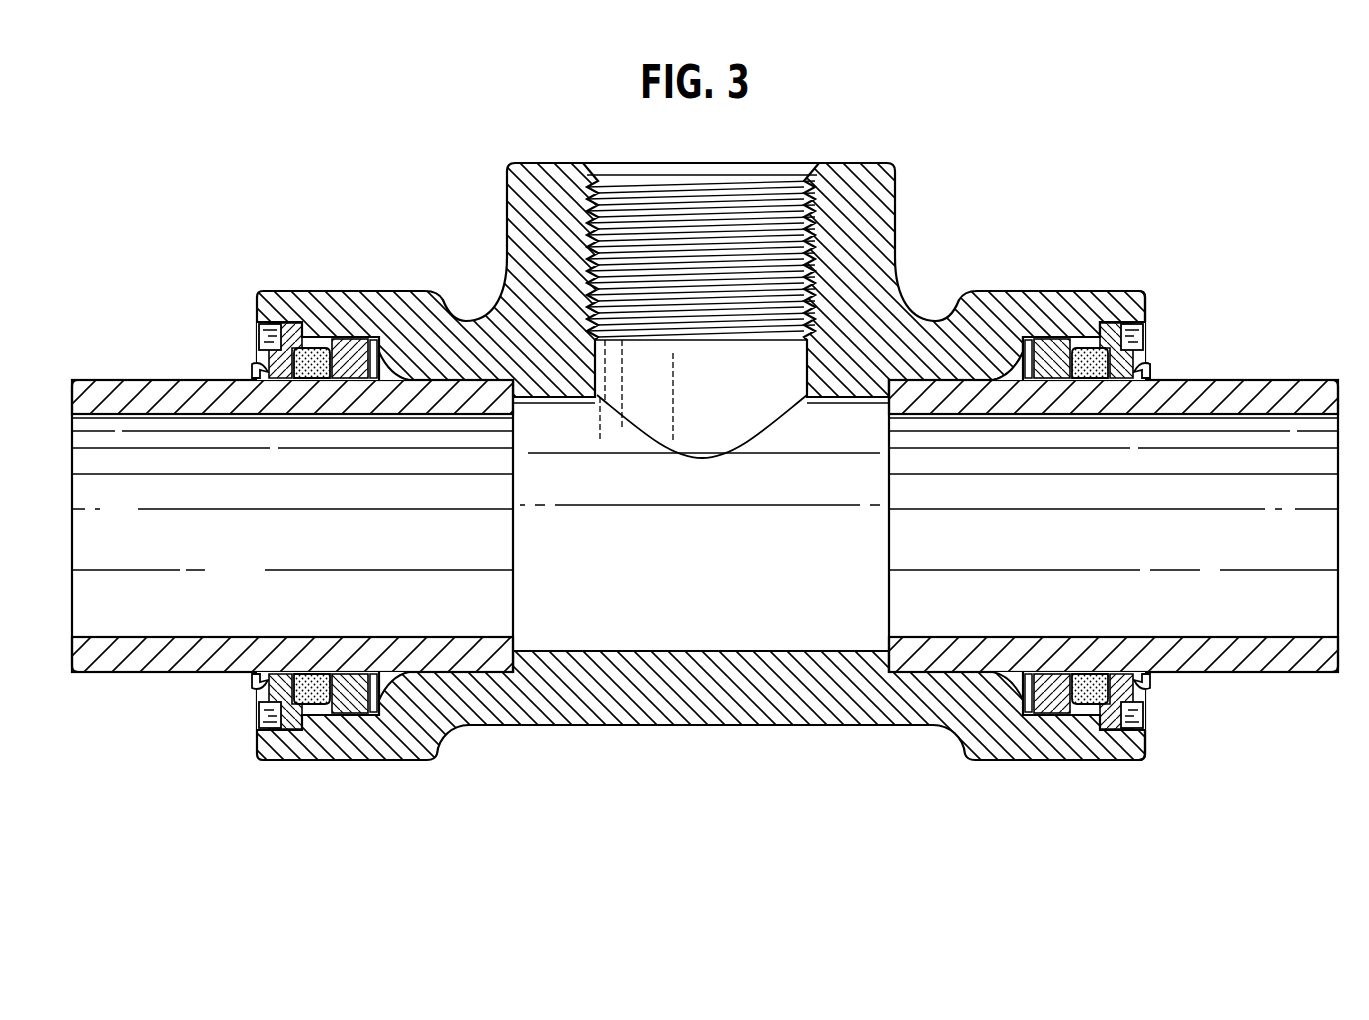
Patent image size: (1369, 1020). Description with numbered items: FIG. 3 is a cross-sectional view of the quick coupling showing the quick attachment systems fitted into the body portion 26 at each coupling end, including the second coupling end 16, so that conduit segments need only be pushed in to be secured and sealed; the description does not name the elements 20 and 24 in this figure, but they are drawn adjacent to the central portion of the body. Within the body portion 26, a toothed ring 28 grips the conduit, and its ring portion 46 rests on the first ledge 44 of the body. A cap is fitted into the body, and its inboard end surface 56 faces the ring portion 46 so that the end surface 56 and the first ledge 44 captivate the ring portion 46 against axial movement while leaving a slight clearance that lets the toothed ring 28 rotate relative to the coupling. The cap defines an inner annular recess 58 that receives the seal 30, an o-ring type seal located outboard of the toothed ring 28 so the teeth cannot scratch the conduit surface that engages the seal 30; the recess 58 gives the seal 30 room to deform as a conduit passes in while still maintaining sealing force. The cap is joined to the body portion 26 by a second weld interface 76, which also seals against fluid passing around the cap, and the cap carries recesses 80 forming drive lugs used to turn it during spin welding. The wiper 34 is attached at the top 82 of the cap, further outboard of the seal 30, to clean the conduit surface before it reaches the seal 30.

The second coupling end 16 is at (942, 734).
The coupling body 20 is at (872, 162).
The threaded port 24 is at (773, 185).
The body portion 26 is at (1068, 292).
The toothed ring 28 is at (1010, 336).
The seal 30 is at (1089, 352).
The wiper 34 is at (1158, 373).
The first ledge 44 is at (1030, 714).
The ring portion 46 is at (1003, 340).
The inboard end surface 56 is at (1031, 347).
The inner annular recess 58 is at (1107, 672).
The second weld interface 76 is at (1105, 333).
The recesses 80 is at (1134, 335).
The top 82 is at (1150, 338).